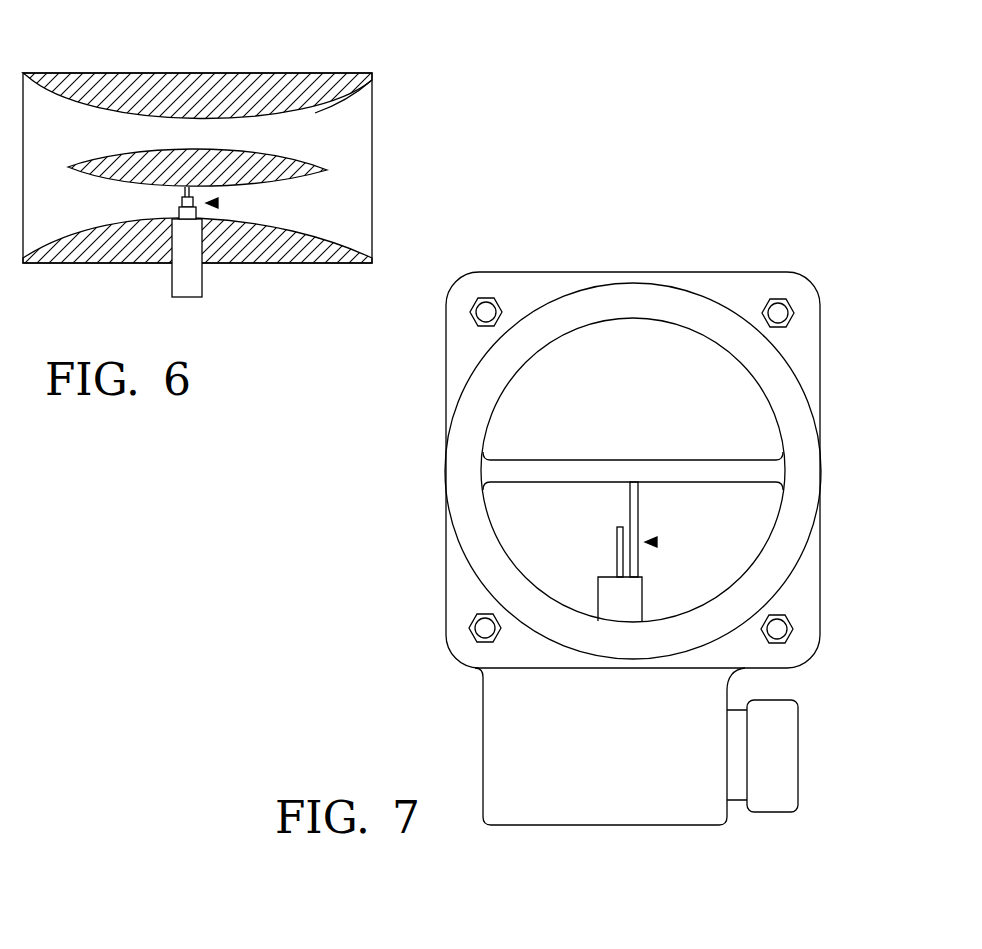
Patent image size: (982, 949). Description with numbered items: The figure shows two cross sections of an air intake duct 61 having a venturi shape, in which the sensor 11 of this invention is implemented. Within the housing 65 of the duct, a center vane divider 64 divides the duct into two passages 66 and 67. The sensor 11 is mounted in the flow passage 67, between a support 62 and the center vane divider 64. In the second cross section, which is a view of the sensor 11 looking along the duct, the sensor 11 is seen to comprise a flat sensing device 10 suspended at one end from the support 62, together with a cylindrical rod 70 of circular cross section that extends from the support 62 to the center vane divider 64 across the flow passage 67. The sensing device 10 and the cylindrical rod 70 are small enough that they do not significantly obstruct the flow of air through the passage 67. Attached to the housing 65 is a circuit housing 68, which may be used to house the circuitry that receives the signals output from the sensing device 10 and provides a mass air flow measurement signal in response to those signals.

In FIG. 6, the intake duct 61 is at (245, 77).
In FIG. 6, the housing 65 is at (143, 95).
In FIG. 7, the housing 65 is at (738, 288).
In FIG. 6, the passage 66 is at (340, 95).
In FIG. 7, the passage 66 is at (502, 397).
In FIG. 6, the flow passage 67 is at (323, 245).
In FIG. 7, the flow passage 67 is at (493, 530).
In FIG. 6, the center vane divider 64 is at (280, 167).
In FIG. 7, the center vane divider 64 is at (678, 456).
In FIG. 6, the support 62 is at (180, 212).
In FIG. 7, the support 62 is at (635, 595).
In FIG. 6, the circuit housing 68 is at (192, 273).
In FIG. 7, the circuit housing 68 is at (498, 753).
In FIG. 6, the sensor 11 is at (214, 203).
In FIG. 7, the sensor 11 is at (654, 542).
In FIG. 7, the flat sensing device 10 is at (612, 541).
In FIG. 7, the cylindrical rod 70 is at (638, 515).